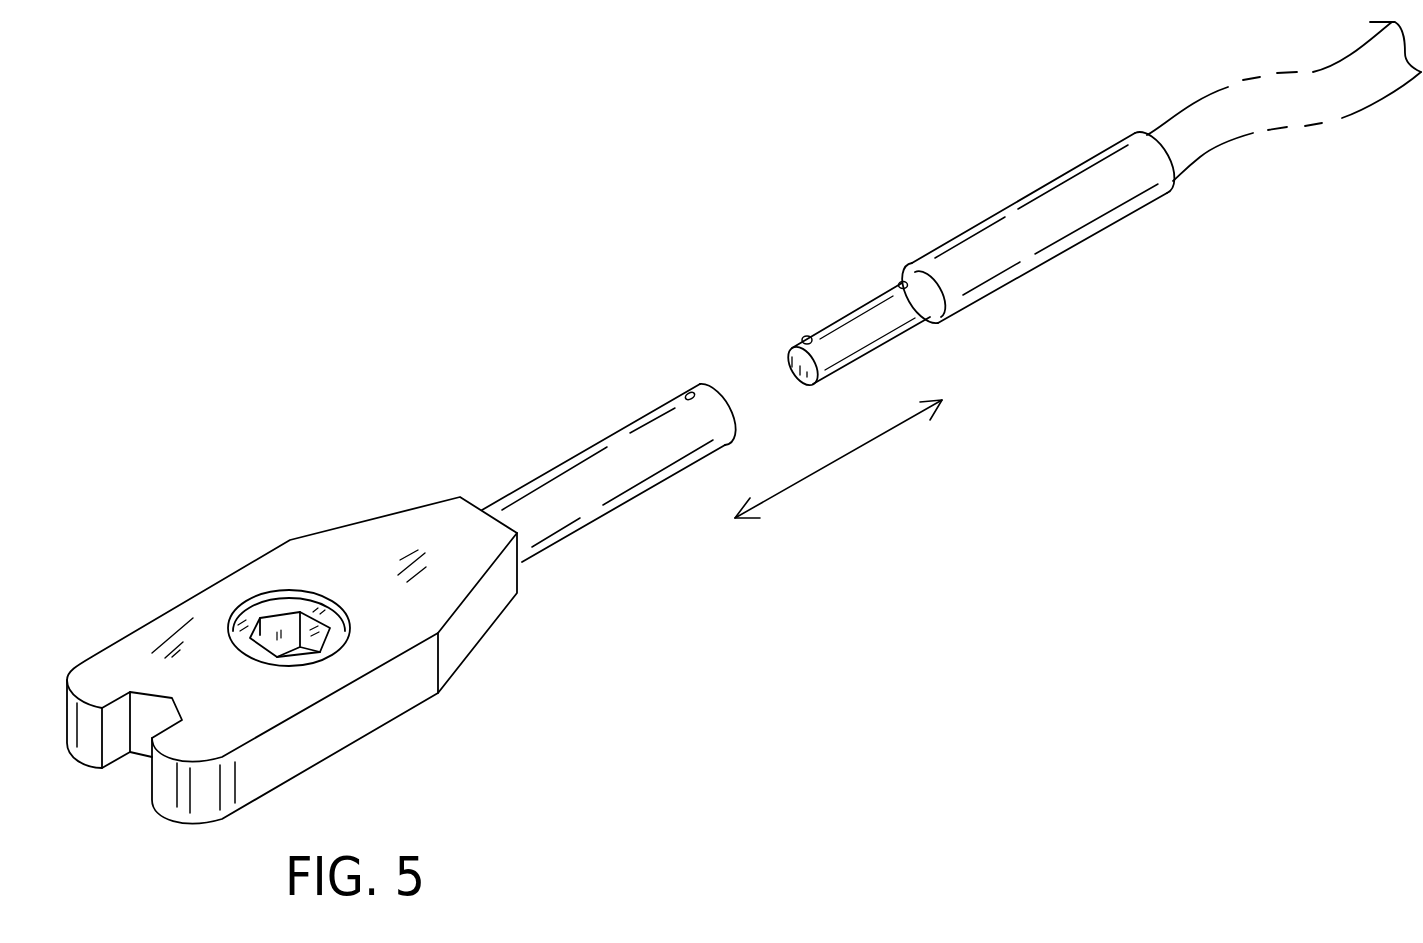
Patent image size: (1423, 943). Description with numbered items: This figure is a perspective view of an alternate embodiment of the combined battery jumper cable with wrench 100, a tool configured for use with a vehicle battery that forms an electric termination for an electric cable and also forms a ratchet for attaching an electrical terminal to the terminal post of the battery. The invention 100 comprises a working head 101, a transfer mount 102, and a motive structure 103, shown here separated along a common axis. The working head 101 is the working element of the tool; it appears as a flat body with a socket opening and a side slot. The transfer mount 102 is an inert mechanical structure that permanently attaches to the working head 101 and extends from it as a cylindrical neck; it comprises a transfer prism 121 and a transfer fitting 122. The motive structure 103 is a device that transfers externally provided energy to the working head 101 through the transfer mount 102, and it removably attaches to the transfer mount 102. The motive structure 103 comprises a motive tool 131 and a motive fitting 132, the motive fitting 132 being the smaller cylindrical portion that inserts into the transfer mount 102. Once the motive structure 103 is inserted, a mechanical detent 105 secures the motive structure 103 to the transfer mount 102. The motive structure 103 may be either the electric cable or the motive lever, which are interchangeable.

The combined battery jumper cable with wrench 100 is at (286, 182).
The working head 101 is at (222, 567).
The transfer mount 102 is at (670, 492).
The motive structure 103 is at (992, 302).
The mechanical detent 105 is at (733, 407).
The transfer prism 121 is at (575, 495).
The transfer fitting 122 is at (688, 393).
The motive tool 131 is at (990, 223).
The motive fitting 132 is at (867, 315).